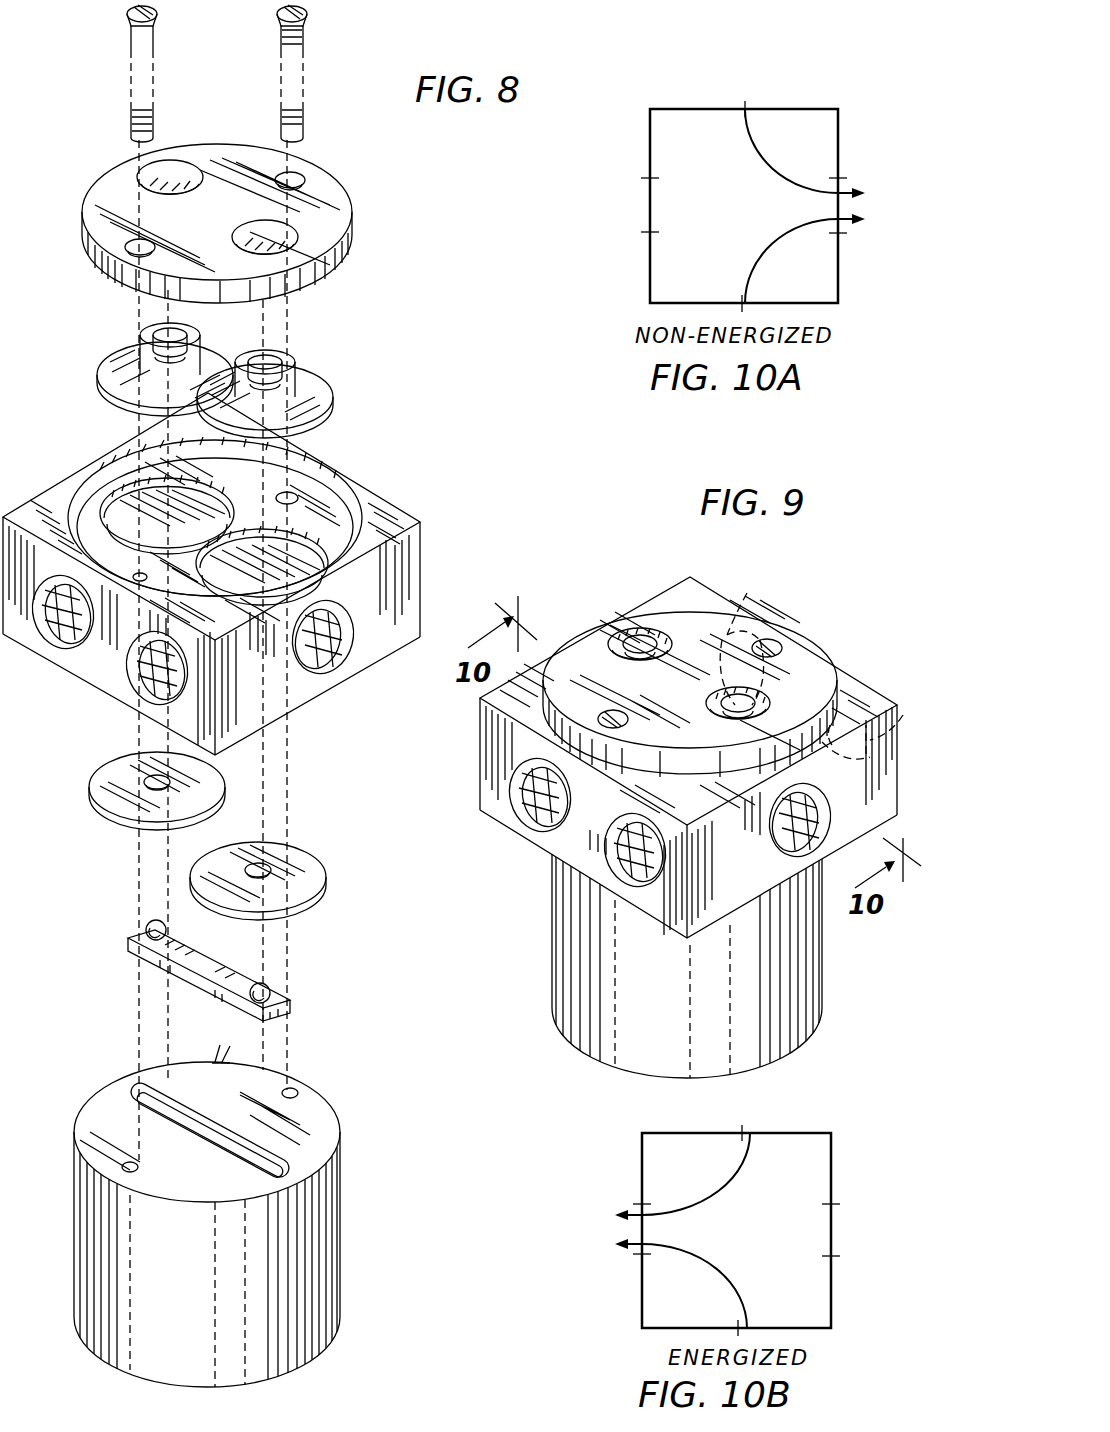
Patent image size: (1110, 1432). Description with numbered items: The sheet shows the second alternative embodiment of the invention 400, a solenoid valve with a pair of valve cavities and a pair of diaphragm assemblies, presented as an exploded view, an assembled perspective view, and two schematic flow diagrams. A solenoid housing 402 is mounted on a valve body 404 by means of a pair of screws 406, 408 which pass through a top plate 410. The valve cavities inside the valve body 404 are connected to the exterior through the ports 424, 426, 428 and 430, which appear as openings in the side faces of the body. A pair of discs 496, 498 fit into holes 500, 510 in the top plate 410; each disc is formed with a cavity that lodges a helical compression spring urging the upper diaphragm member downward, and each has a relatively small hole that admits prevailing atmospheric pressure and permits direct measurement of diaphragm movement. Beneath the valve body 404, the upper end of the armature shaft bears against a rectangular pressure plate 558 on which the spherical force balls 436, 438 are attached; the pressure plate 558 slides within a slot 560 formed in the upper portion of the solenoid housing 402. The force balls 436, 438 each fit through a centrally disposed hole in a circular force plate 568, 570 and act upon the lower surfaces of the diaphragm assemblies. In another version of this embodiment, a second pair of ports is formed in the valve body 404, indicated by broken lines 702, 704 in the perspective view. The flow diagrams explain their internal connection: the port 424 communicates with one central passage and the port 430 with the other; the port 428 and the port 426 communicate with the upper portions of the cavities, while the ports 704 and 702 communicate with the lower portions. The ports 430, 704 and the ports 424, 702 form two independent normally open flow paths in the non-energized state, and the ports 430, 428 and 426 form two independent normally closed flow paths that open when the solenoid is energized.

In FIG. 8, the second alternative embodiment of the invention 400 is at (395, 1191).
In FIG. 9, the second alternative embodiment of the invention 400 is at (848, 1012).
In FIG. 8, the solenoid housing 402 is at (330, 1281).
In FIG. 9, the solenoid housing 402 is at (660, 1062).
In FIG. 8, the valve body 404 is at (423, 568).
In FIG. 9, the valve body 404 is at (866, 680).
In FIG. 8, the screw 406 is at (143, 115).
In FIG. 9, the screw 406 is at (612, 710).
In FIG. 8, the screw 408 is at (296, 113).
In FIG. 9, the screw 408 is at (775, 645).
In FIG. 8, the top plate 410 is at (330, 238).
In FIG. 9, the top plate 410 is at (690, 694).
In FIG. 8, the port 424 is at (329, 664).
In FIG. 9, the port 424 is at (790, 847).
In FIG. 10A, the port 424 is at (748, 110).
In FIG. 10B, the port 424 is at (742, 1135).
In FIG. 8, the port 426 is at (58, 628).
In FIG. 9, the port 426 is at (522, 812).
In FIG. 10A, the port 426 is at (650, 178).
In FIG. 10B, the port 426 is at (643, 1203).
In FIG. 8, the port 428 is at (143, 694).
In FIG. 9, the port 428 is at (663, 870).
In FIG. 10A, the port 428 is at (648, 234).
In FIG. 10B, the port 428 is at (643, 1256).
In FIG. 10A, the port 430 is at (748, 304).
In FIG. 10B, the port 430 is at (738, 1325).
In FIG. 8, the spherical force ball 436 is at (146, 924).
In FIG. 8, the spherical force ball 438 is at (270, 988).
In FIG. 8, the disc 496 is at (108, 368).
In FIG. 9, the disc 496 is at (630, 630).
In FIG. 8, the disc 498 is at (316, 395).
In FIG. 9, the disc 498 is at (740, 722).
In FIG. 8, the hole in top plate 500 is at (137, 173).
In FIG. 8, the hole in top plate 510 is at (294, 222).
In FIG. 8, the rectangular pressure plate 558 is at (292, 1012).
In FIG. 8, the slot 560 is at (292, 1163).
In FIG. 8, the circular force plate 568 is at (133, 818).
In FIG. 8, the circular force plate 570 is at (328, 891).
In FIG. 9, the port (broken lines) 702 is at (737, 612).
In FIG. 10A, the port (broken lines) 702 is at (843, 177).
In FIG. 10B, the port (broken lines) 702 is at (840, 1205).
In FIG. 9, the port (broken lines) 704 is at (882, 710).
In FIG. 10A, the port (broken lines) 704 is at (843, 238).
In FIG. 10B, the port (broken lines) 704 is at (840, 1258).